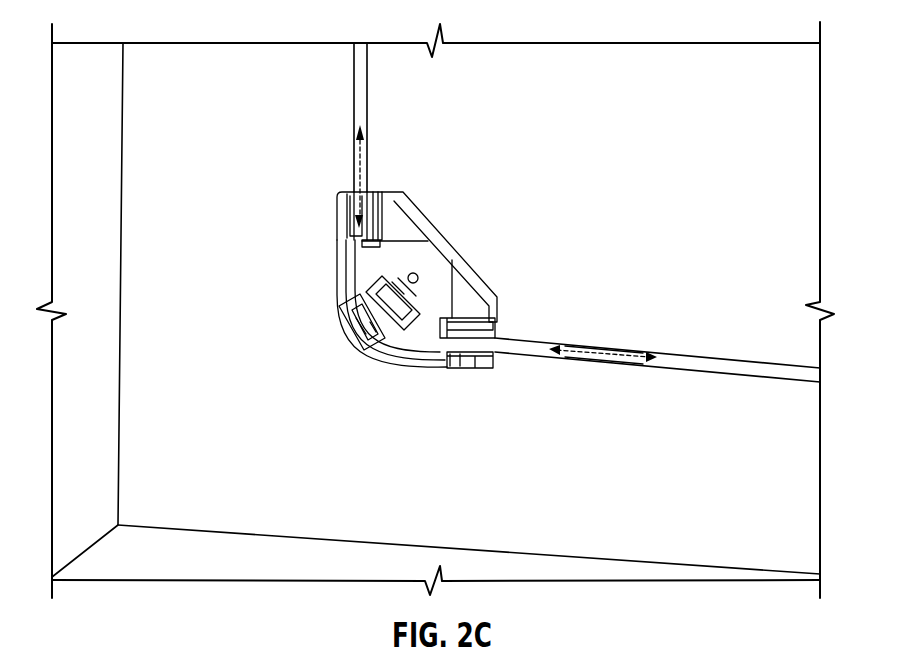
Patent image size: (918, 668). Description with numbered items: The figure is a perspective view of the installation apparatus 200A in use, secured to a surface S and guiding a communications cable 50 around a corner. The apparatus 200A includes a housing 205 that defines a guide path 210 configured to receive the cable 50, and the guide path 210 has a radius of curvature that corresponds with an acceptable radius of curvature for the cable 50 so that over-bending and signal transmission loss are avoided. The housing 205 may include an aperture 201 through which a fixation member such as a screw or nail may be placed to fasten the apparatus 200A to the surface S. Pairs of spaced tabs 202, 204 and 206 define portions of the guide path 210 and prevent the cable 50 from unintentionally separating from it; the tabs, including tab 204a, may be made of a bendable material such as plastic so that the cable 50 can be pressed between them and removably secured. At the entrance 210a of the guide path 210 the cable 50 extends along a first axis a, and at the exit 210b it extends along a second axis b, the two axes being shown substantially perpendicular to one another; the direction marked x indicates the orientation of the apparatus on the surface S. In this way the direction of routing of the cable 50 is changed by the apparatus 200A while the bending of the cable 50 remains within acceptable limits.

The communications cable 50 is at (360, 97).
The first axis a is at (358, 158).
The pair of spaced tabs 202 is at (367, 195).
The entrance of the guide path 210a is at (353, 212).
The housing 205 is at (407, 213).
The aperture 201 is at (420, 279).
The axis direction x is at (396, 273).
The pair of spaced tabs 204 is at (357, 297).
The tab 204a is at (355, 332).
The pair of spaced tabs 206 is at (498, 332).
The exit of the guide path 210b is at (455, 357).
The installation apparatus 200A is at (383, 308).
The guide path 210 is at (514, 331).
The second axis b is at (605, 358).
The surface S is at (124, 222).